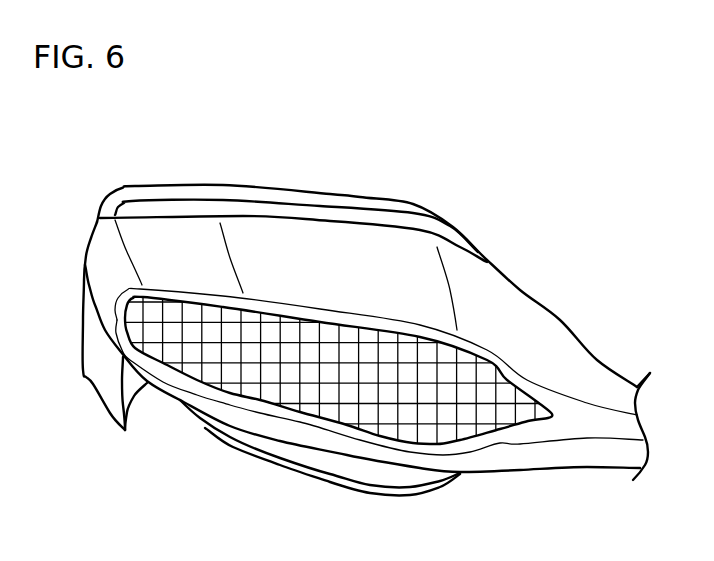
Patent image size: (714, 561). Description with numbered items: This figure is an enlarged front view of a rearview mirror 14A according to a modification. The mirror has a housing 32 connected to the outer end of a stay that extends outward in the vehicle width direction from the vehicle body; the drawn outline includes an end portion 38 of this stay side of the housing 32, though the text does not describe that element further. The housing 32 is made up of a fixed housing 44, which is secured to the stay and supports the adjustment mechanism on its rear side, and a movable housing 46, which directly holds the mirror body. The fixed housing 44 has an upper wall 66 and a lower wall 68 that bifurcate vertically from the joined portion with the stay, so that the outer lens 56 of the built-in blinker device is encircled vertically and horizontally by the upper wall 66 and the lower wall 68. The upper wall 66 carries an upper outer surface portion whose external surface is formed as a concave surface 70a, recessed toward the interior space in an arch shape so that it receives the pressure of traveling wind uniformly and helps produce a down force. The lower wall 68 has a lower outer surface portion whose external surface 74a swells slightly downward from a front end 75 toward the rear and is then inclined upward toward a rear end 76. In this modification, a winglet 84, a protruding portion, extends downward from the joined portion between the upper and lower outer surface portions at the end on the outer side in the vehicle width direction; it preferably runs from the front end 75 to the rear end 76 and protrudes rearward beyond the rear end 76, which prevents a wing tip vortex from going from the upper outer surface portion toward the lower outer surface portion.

The rearview mirror 14A is at (398, 101).
The housing 32 is at (253, 137).
The movable housing 46 is at (180, 187).
The fixed housing 44 is at (243, 214).
The concave surface 70a is at (392, 257).
The upper wall 66 is at (518, 330).
The rear end 76 is at (82, 268).
The winglet 84 is at (100, 338).
The front end 75 is at (123, 357).
The external surface 74a is at (247, 417).
The outer lens 56 is at (293, 392).
The lower wall 68 is at (493, 460).
The end portion 38 is at (583, 453).